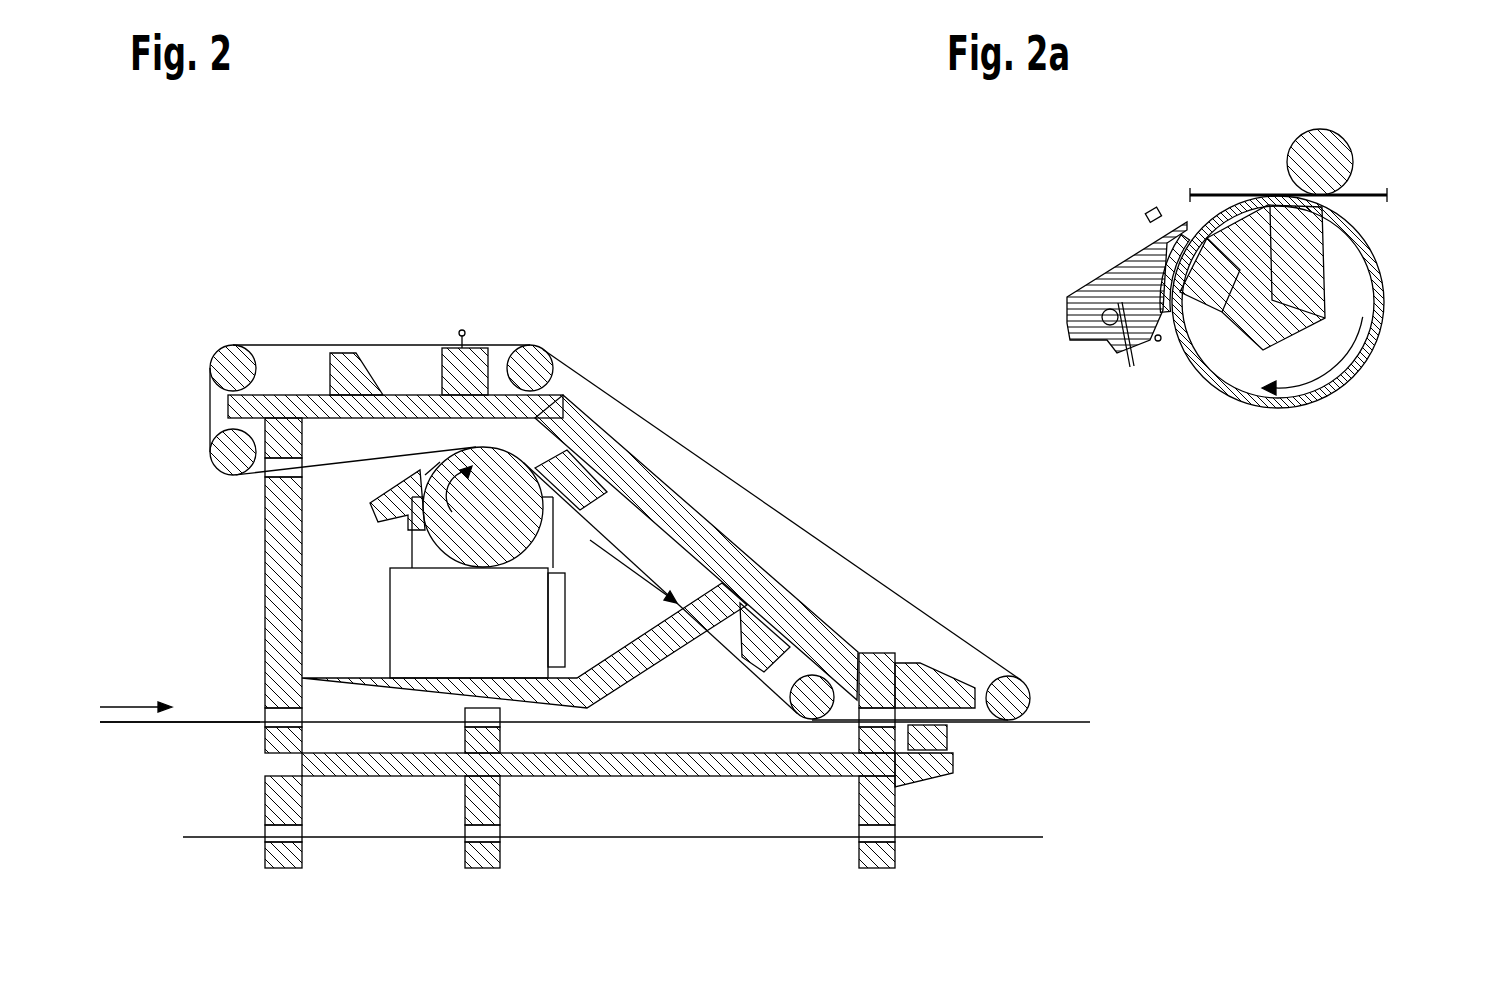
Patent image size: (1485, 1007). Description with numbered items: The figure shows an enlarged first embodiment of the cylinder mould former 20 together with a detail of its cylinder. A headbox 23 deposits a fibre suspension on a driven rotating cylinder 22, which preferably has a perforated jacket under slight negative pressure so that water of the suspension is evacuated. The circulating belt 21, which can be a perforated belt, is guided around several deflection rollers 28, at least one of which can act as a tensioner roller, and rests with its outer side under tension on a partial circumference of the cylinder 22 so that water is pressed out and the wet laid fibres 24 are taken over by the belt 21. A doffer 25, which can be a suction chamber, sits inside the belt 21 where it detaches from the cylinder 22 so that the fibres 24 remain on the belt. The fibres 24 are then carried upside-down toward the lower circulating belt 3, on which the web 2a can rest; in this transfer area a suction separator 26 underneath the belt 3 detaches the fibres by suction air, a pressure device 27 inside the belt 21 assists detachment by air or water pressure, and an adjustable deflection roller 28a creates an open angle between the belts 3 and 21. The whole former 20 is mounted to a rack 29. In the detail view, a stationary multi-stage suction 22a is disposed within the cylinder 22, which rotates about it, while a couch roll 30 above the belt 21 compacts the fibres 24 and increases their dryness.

In FIG. 2, the cylinder mould former 20 is at (746, 416).
In FIG. 2, the circulating belt 21 is at (803, 527).
In FIG. 2A, the circulating belt 21 is at (1373, 190).
In FIG. 2, the cylinder 22 is at (490, 475).
In FIG. 2A, the cylinder 22 is at (1238, 377).
In FIG. 2A, the suction 22a is at (1290, 318).
In FIG. 2, the headbox 23 is at (402, 498).
In FIG. 2A, the headbox 23 is at (1108, 273).
In FIG. 2, the wet laid fibres 24 is at (437, 462).
In FIG. 2A, the wet laid fibres 24 is at (1183, 227).
In FIG. 2, the doffer 25 is at (590, 475).
In FIG. 2, the suction separator 26 is at (940, 740).
In FIG. 2, the pressure device 27 is at (920, 680).
In FIG. 2, the deflection rollers 28 is at (228, 370).
In FIG. 2, the deflection roller 28a is at (1010, 693).
In FIG. 2, the rack 29 is at (285, 582).
In FIG. 2A, the couch roll 30 is at (1286, 123).
In FIG. 2, the web 2a is at (197, 722).
In FIG. 2, the circulating belt 3 is at (143, 723).